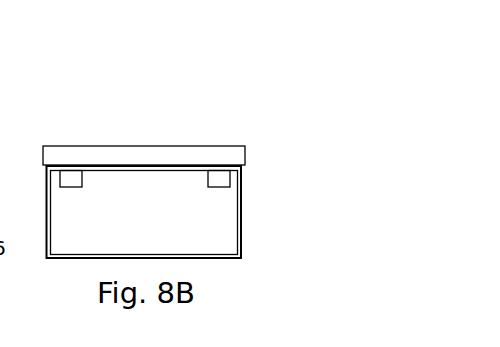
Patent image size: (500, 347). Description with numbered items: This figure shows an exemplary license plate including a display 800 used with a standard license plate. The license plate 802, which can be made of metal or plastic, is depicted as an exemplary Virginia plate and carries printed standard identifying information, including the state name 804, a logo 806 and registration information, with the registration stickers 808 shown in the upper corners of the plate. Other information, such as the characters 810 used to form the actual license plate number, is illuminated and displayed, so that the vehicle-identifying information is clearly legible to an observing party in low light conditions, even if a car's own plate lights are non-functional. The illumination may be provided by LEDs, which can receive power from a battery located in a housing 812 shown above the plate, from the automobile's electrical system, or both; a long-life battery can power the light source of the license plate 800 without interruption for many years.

The license plate including a display 800 is at (184, 172).
The license plate 802 is at (57, 258).
The state name 804 is at (148, 168).
The logo 806 is at (239, 252).
The registration stickers 808 is at (62, 167).
The characters 810 is at (222, 214).
The housing 812 is at (71, 152).